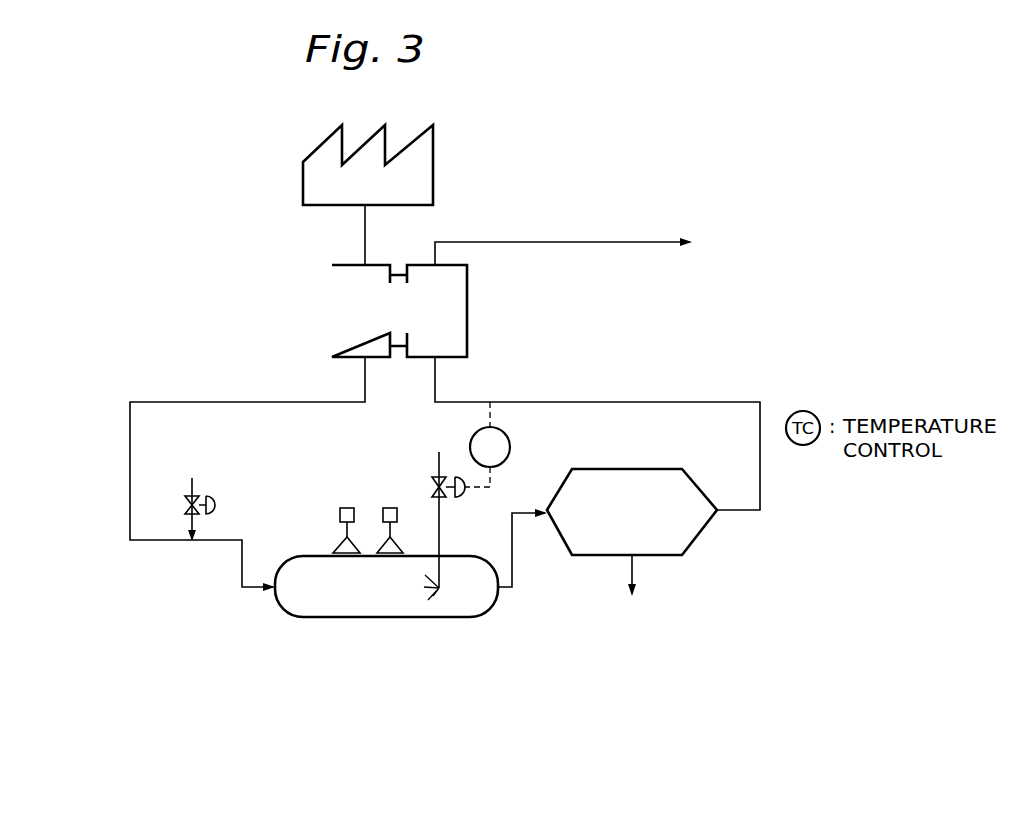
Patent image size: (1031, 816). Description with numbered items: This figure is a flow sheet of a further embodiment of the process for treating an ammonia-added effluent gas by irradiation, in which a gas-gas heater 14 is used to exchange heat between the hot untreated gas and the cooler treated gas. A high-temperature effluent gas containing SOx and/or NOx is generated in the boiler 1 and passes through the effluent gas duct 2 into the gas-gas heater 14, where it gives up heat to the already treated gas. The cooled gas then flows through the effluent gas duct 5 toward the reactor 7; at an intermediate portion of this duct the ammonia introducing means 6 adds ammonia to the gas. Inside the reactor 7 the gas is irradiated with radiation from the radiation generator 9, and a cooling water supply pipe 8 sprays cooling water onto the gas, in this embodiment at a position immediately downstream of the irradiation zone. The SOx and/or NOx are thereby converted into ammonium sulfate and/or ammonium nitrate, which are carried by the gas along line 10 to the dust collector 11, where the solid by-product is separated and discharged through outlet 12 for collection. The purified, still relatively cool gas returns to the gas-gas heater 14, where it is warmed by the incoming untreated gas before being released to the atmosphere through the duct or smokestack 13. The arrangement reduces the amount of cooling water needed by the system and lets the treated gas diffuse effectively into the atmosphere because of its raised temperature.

The boiler 1 is at (435, 140).
The effluent gas duct 2 is at (365, 243).
The effluent gas duct 5 is at (170, 543).
The ammonia introducing means 6 is at (194, 482).
The reactor 7 is at (415, 620).
The cooling water supply pipe 8 is at (441, 536).
The radiation generator 9 is at (387, 508).
The pipe to dust collector 10 is at (514, 566).
The dust collector 11 is at (678, 469).
The by-product outlet 12 is at (633, 576).
The duct or smokestack 13 is at (628, 242).
The gas-gas heater 14 is at (467, 311).